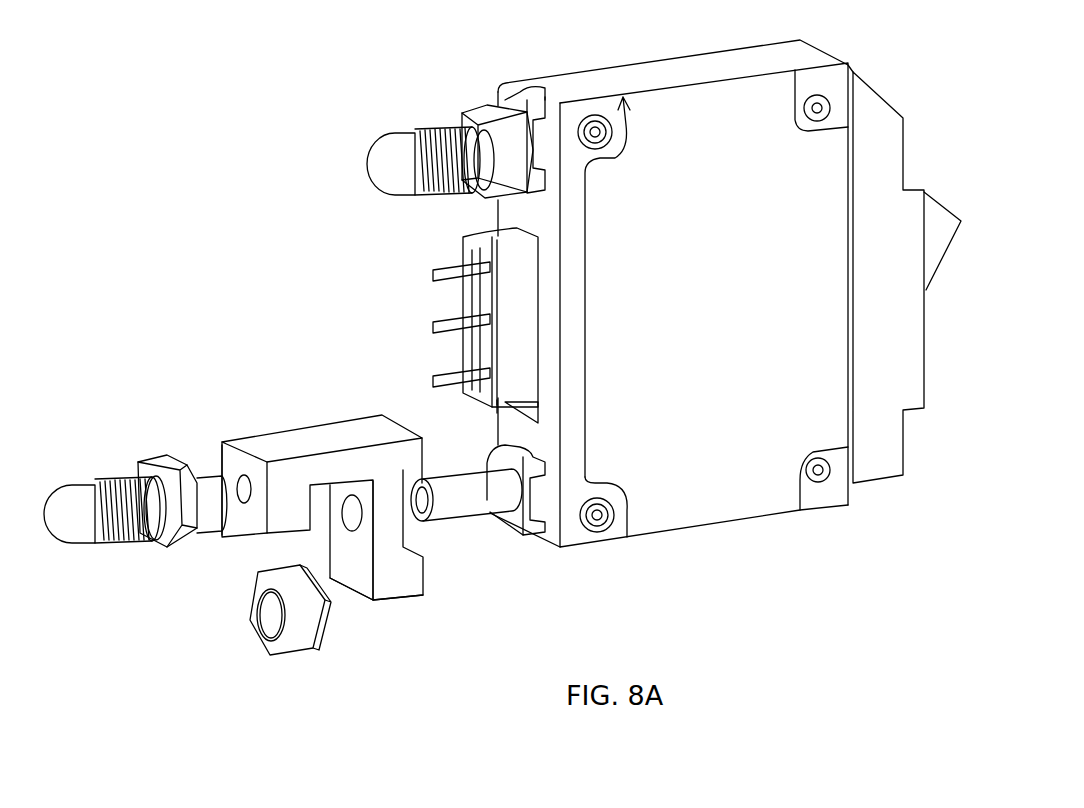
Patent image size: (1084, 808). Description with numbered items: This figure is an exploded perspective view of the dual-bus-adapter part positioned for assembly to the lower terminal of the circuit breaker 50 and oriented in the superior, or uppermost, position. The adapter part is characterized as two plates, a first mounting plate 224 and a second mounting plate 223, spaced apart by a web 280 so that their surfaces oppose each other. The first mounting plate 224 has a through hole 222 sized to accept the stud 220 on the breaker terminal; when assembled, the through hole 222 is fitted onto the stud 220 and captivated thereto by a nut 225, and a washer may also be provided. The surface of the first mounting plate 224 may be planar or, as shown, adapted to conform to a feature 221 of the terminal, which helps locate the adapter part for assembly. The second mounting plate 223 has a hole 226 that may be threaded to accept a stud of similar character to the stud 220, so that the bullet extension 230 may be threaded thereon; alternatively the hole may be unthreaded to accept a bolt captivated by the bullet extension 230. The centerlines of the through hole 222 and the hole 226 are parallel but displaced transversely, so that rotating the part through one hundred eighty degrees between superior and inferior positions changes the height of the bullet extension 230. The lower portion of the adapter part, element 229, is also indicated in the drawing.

The circuit breaker 50 is at (720, 348).
The stud 220 is at (472, 515).
The feature of the terminal 221 is at (523, 452).
The through hole 222 is at (352, 517).
The second mounting plate 223 is at (232, 458).
The first mounting plate 224 is at (427, 580).
The nut 225 is at (267, 582).
The hole 226 is at (242, 498).
The bottom portion of mounting block 229 is at (407, 597).
The bullet extension 230 is at (52, 498).
The web 280 is at (355, 514).